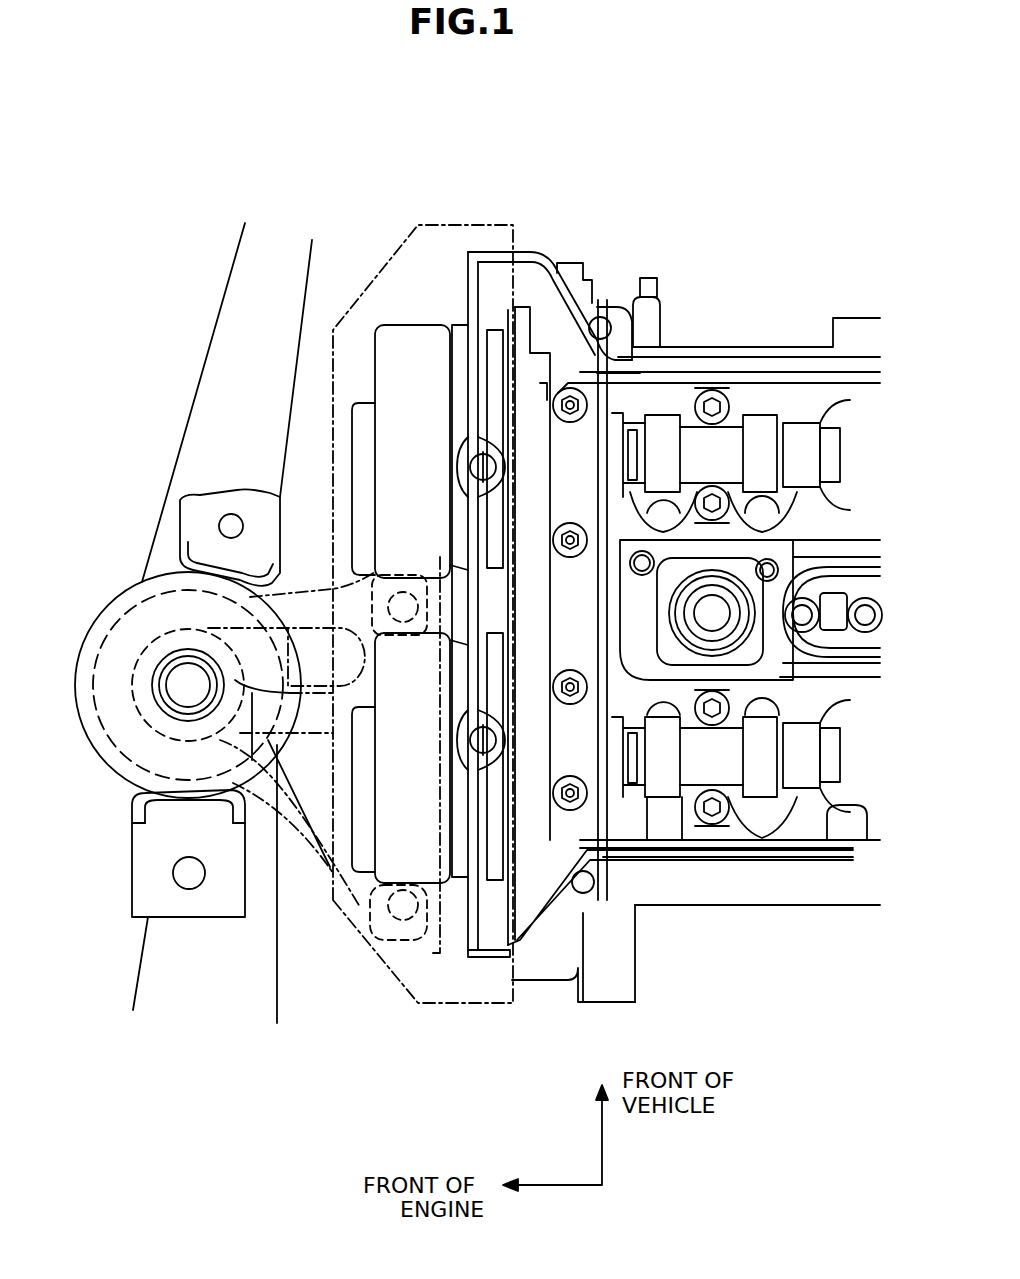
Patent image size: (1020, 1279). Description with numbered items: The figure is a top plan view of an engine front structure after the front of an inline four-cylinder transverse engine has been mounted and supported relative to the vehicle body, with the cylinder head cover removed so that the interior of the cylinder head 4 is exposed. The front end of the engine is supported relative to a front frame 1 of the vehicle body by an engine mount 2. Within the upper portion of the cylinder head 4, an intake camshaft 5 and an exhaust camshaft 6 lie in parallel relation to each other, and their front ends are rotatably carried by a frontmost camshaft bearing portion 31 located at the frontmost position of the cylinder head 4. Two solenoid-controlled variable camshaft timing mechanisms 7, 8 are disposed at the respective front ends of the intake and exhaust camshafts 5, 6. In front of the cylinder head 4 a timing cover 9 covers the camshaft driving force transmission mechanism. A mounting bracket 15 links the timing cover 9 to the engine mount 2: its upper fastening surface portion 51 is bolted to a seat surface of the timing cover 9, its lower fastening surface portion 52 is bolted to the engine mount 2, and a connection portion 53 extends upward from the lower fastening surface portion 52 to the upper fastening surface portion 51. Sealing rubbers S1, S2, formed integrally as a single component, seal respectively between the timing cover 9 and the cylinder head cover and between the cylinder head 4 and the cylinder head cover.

The front frame 1 is at (203, 398).
The engine mount 2 is at (118, 596).
The lower fastening surface portion 52 is at (108, 627).
The connection portion 53 is at (325, 867).
The timing cover 9 is at (412, 228).
The variable camshaft timing mechanism 8 is at (402, 330).
The upper fastening surface portion 51 is at (403, 555).
The variable camshaft timing mechanism 7 is at (382, 865).
The mounting bracket 15 is at (421, 953).
The sealing rubber S1 is at (468, 287).
The sealing rubber S2 is at (552, 277).
The frontmost camshaft bearing portion 31 is at (592, 402).
The cylinder head 4 is at (813, 905).
The exhaust camshaft 6 is at (687, 433).
The intake camshaft 5 is at (688, 778).